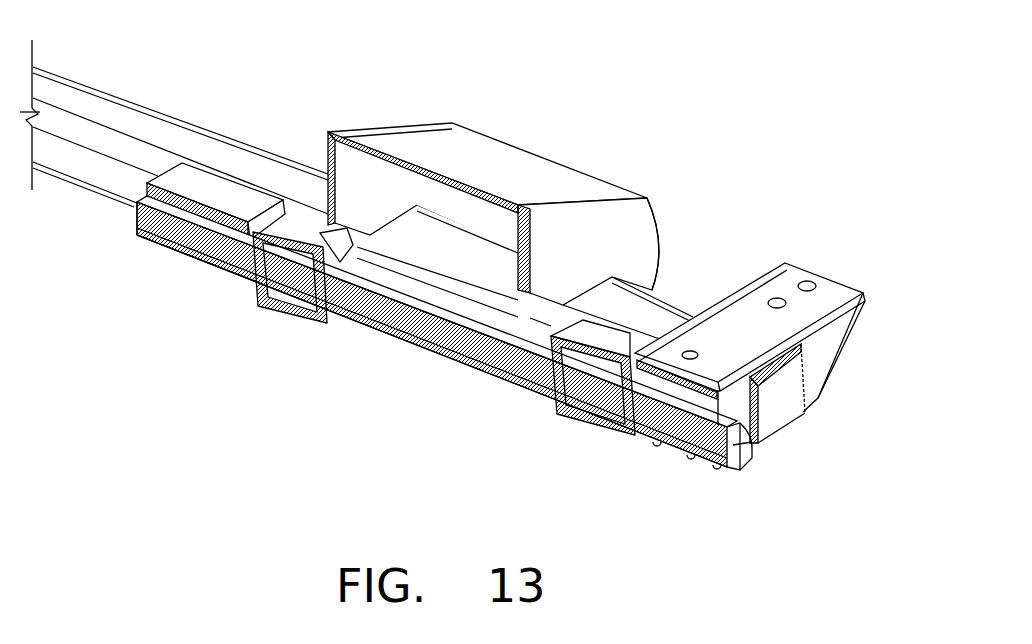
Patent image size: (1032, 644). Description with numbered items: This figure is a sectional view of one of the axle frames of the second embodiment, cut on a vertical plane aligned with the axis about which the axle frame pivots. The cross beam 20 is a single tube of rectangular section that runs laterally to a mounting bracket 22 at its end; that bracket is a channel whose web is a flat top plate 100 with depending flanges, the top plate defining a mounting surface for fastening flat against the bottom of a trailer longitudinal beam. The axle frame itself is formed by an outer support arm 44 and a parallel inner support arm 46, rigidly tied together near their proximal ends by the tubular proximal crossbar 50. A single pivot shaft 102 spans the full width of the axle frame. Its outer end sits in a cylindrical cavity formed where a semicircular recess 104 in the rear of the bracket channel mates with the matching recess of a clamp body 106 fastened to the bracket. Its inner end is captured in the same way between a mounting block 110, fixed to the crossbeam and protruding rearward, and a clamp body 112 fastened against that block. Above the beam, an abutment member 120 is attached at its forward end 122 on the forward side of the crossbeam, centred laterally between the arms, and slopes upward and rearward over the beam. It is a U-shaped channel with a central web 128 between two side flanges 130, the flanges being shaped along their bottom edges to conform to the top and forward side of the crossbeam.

The cross beam 20 is at (145, 128).
The mounting bracket 22 is at (848, 278).
The outer support arm 44 is at (587, 420).
The inner support arm 46 is at (288, 307).
The proximal crossbar 50 is at (493, 373).
The top plate 100 is at (761, 324).
The pivot shaft 102 is at (430, 333).
The semicircular recess 104 is at (740, 420).
The clamp body 106 is at (733, 460).
The mounting block 110 is at (222, 190).
The clamp body 112 is at (202, 267).
The abutment member 120 is at (531, 172).
The forward end 122 is at (667, 240).
The central web 128 is at (448, 172).
The side flange 130 is at (363, 187).